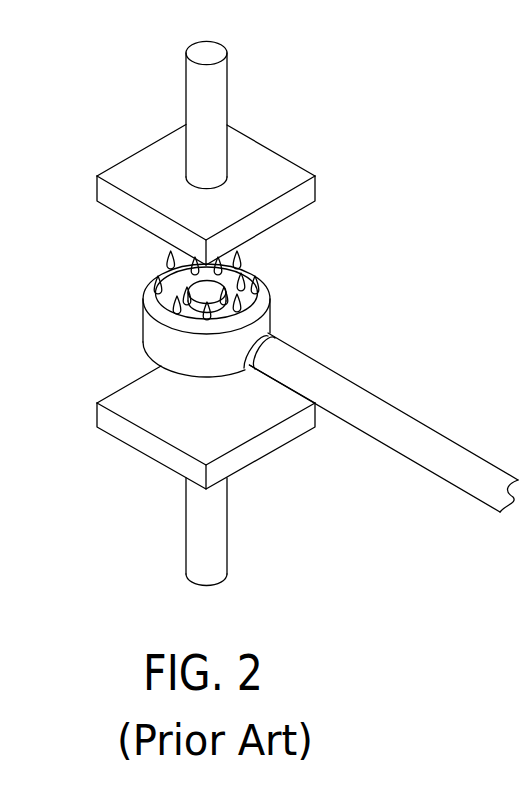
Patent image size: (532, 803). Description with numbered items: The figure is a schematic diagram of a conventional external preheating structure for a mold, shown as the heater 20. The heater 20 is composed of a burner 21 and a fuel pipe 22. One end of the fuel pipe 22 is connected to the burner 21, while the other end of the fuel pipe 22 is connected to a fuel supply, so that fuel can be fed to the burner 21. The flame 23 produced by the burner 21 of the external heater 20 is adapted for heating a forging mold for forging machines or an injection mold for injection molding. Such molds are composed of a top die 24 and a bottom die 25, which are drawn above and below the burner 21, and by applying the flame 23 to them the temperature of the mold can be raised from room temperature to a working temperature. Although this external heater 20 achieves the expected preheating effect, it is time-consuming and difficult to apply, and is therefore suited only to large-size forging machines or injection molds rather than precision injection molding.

The heater 20 is at (432, 262).
The burner 21 is at (270, 294).
The fuel pipe 22 is at (410, 425).
The flame 23 is at (157, 291).
The top die 24 is at (266, 159).
The bottom die 25 is at (268, 445).